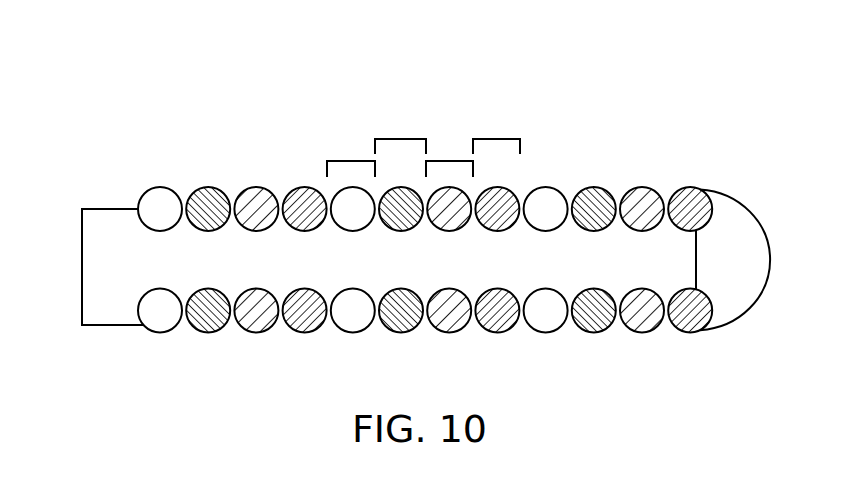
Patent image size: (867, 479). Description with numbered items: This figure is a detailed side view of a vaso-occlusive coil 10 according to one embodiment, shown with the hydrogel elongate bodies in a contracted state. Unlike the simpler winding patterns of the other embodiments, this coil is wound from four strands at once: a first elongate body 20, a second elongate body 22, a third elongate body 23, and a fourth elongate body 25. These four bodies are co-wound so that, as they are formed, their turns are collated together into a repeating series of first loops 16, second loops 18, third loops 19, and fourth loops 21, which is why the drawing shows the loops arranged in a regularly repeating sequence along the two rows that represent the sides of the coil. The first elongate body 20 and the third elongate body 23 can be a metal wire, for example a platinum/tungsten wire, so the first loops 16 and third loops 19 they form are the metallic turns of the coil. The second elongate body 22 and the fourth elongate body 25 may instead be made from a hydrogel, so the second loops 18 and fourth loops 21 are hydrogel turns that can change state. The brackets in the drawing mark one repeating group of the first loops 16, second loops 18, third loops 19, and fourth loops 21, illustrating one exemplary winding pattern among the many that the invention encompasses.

The vaso-occlusive coil 10 is at (286, 49).
The first coil loops 16 is at (360, 161).
The second coil loops 18 is at (398, 139).
The third loops 19 is at (448, 161).
The first elongate body 20 is at (162, 200).
The fourth loops 21 is at (500, 139).
The second elongate body 22 is at (207, 198).
The third elongate body 23 is at (255, 197).
The fourth elongate body 25 is at (302, 197).